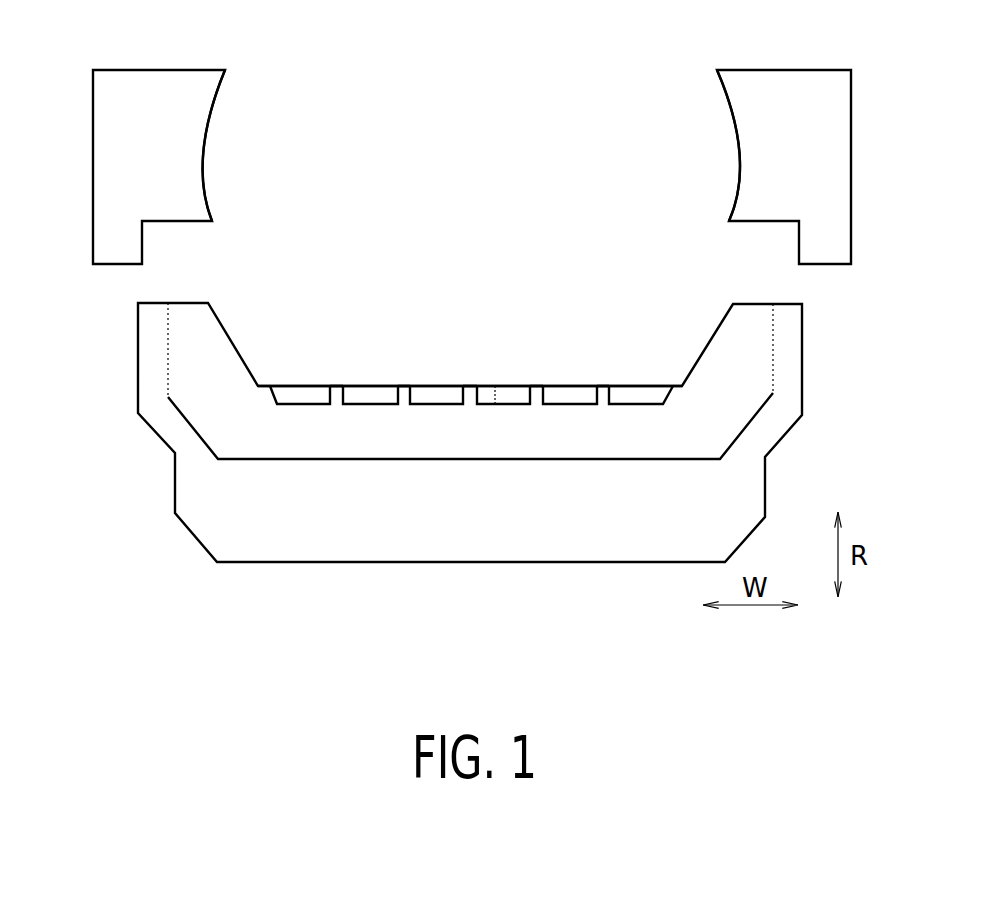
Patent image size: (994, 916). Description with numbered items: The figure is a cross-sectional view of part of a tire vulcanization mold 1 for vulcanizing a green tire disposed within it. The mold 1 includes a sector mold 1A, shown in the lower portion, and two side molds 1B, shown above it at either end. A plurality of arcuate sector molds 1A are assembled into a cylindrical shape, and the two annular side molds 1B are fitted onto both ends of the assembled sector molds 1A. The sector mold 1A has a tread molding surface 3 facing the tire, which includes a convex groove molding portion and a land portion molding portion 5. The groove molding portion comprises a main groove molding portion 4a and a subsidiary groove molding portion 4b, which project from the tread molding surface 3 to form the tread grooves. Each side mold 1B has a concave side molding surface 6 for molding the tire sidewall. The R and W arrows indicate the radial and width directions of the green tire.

The tire vulcanization mold 1 is at (469, 473).
The sector mold 1A is at (576, 533).
The side mold 1B is at (93, 140).
The tread molding surface 3 is at (518, 386).
The main groove molding portion 4a is at (403, 386).
The subsidiary groove molding portion 4b is at (367, 395).
The land portion molding portion 5 is at (495, 386).
The side molding surface 6 is at (202, 160).